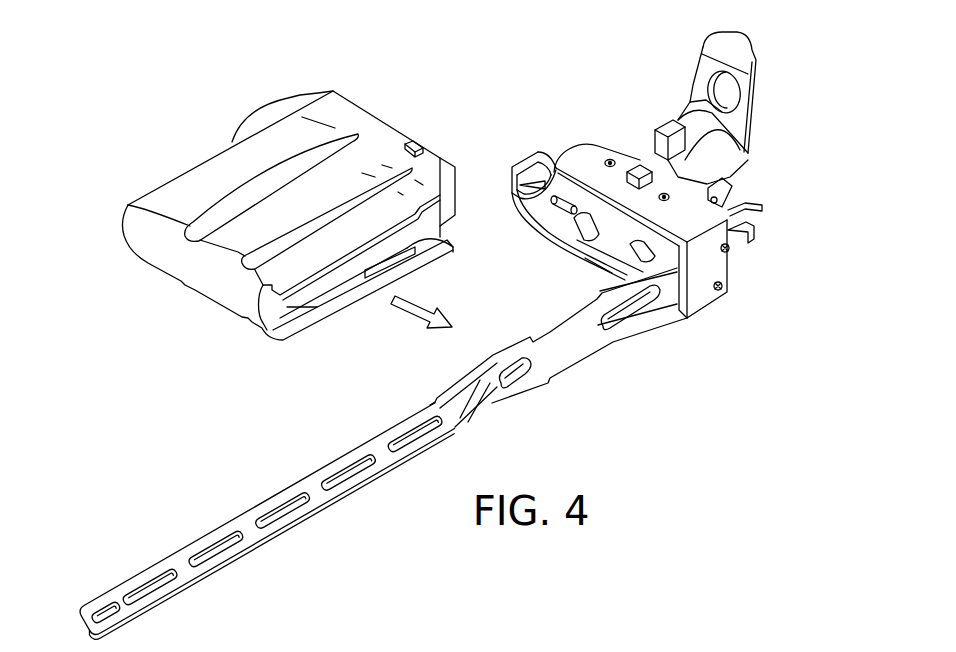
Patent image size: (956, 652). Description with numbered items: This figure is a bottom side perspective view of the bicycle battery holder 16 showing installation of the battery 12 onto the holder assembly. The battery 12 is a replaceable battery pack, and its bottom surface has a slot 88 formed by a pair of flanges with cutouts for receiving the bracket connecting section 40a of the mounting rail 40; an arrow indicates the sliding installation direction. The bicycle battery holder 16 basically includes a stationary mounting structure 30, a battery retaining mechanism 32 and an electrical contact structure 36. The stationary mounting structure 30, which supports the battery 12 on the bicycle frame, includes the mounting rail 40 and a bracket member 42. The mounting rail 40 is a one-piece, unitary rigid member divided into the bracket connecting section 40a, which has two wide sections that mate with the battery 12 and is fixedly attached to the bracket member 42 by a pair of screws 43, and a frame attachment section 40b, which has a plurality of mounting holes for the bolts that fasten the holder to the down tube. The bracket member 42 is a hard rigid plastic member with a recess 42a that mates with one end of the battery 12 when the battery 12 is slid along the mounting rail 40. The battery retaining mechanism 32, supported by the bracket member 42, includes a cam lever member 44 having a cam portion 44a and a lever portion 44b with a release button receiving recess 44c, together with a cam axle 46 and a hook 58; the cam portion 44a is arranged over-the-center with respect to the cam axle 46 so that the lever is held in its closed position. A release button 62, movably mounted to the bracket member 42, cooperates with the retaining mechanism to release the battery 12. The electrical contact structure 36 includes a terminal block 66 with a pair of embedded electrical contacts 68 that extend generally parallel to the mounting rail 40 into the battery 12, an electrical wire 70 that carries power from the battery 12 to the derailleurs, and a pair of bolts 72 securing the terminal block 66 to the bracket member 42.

The battery 12 is at (281, 216).
The bicycle battery holder 16 is at (458, 330).
The stationary mounting structure 30 is at (416, 376).
The battery retaining mechanism 32 is at (694, 112).
The electrical contact structure 36 is at (550, 181).
The mounting rail 40 is at (381, 455).
The bracket connecting section 40a is at (558, 350).
The frame attachment section 40b is at (257, 537).
The bracket member 42 is at (635, 240).
The recess 42a is at (557, 170).
The screws 43 is at (729, 247).
The cam lever member 44 is at (730, 101).
The cam portion 44a is at (723, 148).
The lever portion 44b is at (733, 50).
The release button receiving recess 44c is at (737, 86).
The cam axle 46 is at (735, 191).
The hook 58 is at (570, 255).
The release button 62 is at (637, 166).
The terminal block 66 is at (553, 199).
The electrical contacts 68 is at (558, 227).
The electrical wire 70 is at (753, 213).
The bolts 72 is at (608, 159).
The slot 88 is at (332, 278).